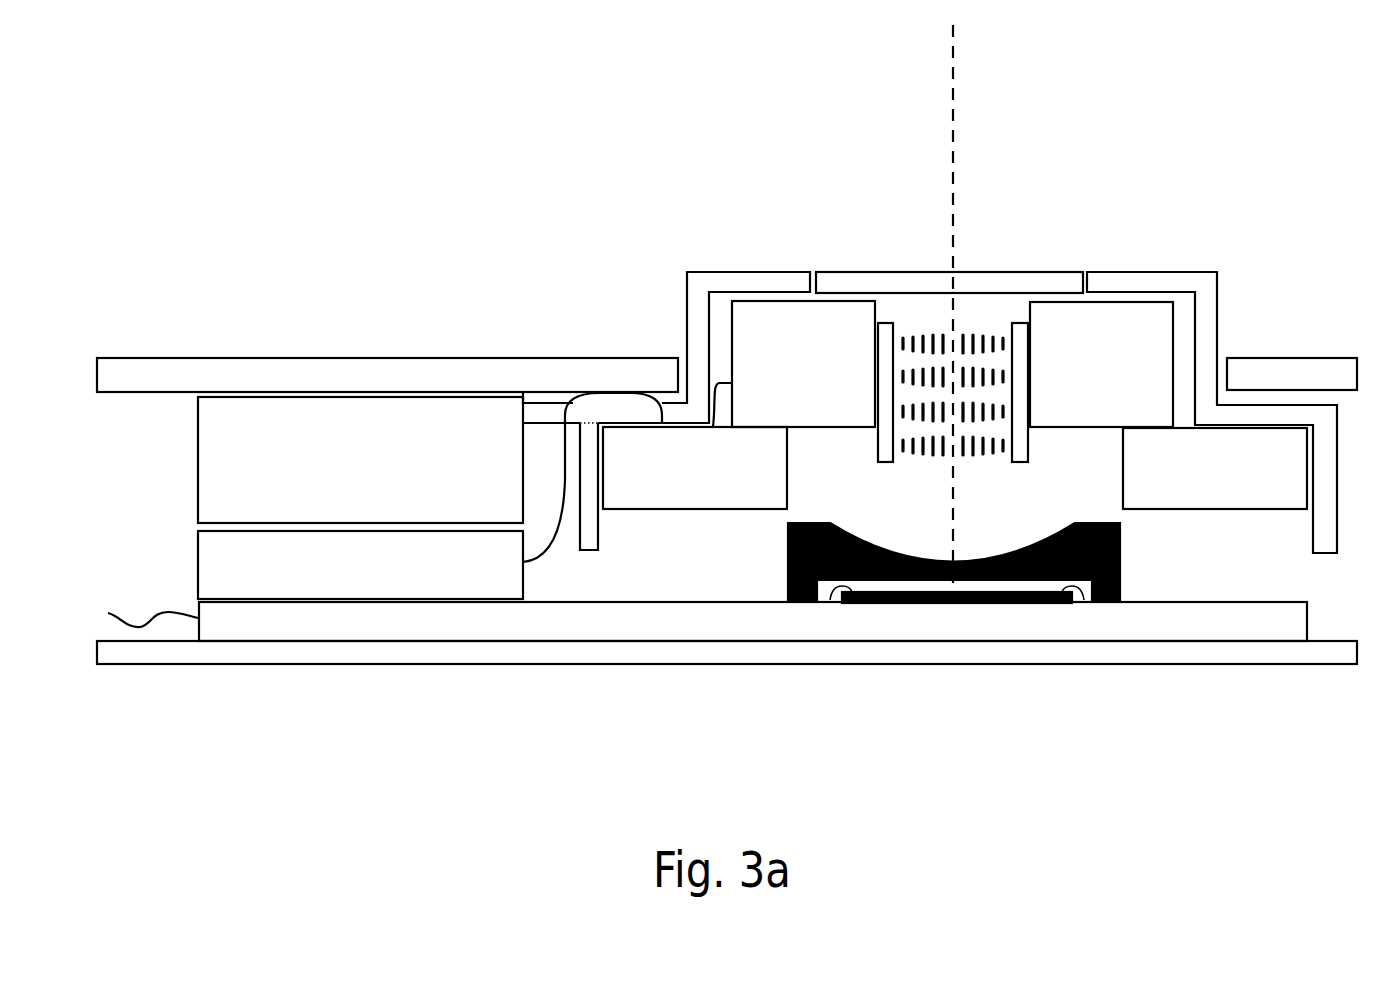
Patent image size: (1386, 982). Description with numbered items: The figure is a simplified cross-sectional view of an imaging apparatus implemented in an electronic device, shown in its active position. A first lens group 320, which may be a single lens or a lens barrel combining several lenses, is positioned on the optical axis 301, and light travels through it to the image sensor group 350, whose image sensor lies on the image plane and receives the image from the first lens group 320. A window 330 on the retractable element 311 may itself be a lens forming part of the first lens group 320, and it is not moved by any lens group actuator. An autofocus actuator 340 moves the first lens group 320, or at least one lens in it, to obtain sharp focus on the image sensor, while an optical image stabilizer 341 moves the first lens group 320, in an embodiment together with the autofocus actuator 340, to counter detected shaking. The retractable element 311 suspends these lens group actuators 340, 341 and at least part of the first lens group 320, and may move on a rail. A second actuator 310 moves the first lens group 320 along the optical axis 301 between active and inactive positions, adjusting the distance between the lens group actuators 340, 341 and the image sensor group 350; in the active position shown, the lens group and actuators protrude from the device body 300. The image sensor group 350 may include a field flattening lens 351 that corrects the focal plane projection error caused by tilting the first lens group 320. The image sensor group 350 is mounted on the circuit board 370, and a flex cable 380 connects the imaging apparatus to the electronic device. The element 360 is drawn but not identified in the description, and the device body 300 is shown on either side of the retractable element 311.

The device body 300 is at (416, 367).
The optical axis 301 is at (955, 108).
The second actuator 310 is at (303, 423).
The retractable element 311 is at (1148, 270).
The first lens group 320 is at (918, 335).
The window 330 is at (992, 270).
The autofocus actuator 340 is at (747, 338).
The optical image stabilizer 341 is at (713, 467).
The image sensor group 350 is at (942, 605).
The field flattening lens 351 is at (1120, 580).
The electronic component 360 is at (410, 568).
The circuit board 370 is at (298, 628).
The flex cable 380 is at (128, 620).